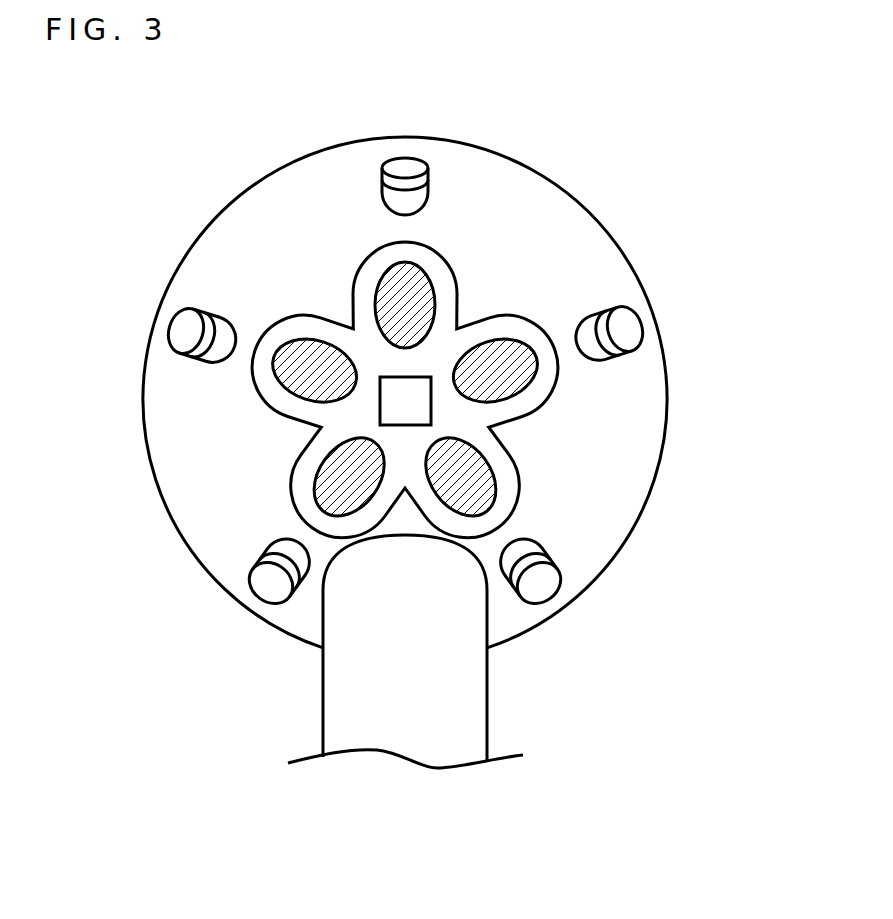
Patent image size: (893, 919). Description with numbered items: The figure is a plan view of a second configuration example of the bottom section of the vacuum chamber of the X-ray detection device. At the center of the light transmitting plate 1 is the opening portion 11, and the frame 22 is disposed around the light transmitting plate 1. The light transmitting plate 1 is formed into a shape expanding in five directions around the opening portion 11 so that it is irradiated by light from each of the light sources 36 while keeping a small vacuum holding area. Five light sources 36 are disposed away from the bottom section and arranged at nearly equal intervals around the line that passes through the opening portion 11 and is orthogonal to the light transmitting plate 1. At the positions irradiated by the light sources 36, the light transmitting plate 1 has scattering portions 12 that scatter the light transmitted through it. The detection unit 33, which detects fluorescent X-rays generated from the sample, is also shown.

The light transmitting plate 1 is at (443, 330).
The opening portion 11 is at (390, 390).
The scattering portion 12 is at (410, 280).
The frame 22 is at (533, 207).
The detection unit 33 is at (473, 723).
The light source 36 is at (405, 192).